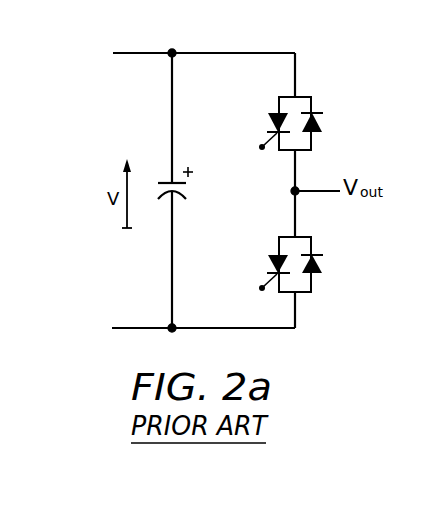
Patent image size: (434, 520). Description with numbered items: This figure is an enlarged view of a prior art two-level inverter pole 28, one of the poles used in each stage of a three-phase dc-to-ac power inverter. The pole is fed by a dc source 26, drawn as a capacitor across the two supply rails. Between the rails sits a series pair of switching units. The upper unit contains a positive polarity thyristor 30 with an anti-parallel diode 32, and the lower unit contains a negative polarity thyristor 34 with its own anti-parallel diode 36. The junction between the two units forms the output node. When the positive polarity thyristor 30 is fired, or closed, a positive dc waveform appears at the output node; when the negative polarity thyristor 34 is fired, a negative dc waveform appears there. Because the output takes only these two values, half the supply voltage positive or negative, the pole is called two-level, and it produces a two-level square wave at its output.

The dc source 26 is at (180, 198).
The two-level inverter pole 28 is at (86, 96).
The positive polarity thyristor 30 is at (267, 119).
The anti-parallel diode 32 is at (322, 125).
The negative polarity thyristor 34 is at (267, 261).
The anti-parallel diode 36 is at (322, 266).